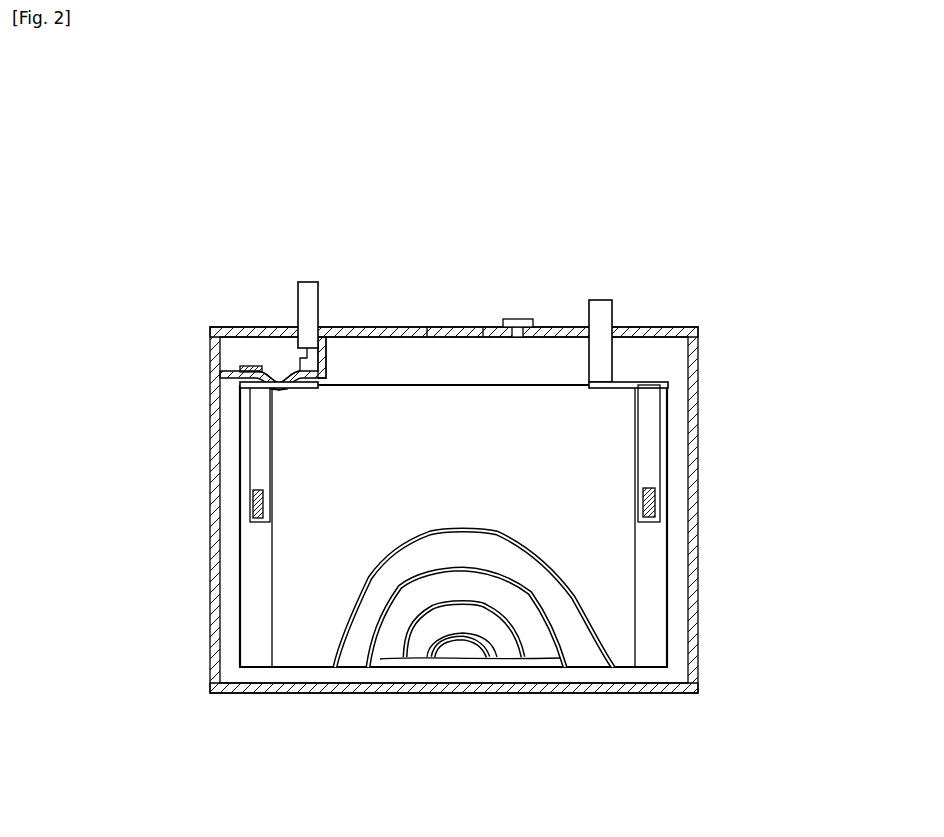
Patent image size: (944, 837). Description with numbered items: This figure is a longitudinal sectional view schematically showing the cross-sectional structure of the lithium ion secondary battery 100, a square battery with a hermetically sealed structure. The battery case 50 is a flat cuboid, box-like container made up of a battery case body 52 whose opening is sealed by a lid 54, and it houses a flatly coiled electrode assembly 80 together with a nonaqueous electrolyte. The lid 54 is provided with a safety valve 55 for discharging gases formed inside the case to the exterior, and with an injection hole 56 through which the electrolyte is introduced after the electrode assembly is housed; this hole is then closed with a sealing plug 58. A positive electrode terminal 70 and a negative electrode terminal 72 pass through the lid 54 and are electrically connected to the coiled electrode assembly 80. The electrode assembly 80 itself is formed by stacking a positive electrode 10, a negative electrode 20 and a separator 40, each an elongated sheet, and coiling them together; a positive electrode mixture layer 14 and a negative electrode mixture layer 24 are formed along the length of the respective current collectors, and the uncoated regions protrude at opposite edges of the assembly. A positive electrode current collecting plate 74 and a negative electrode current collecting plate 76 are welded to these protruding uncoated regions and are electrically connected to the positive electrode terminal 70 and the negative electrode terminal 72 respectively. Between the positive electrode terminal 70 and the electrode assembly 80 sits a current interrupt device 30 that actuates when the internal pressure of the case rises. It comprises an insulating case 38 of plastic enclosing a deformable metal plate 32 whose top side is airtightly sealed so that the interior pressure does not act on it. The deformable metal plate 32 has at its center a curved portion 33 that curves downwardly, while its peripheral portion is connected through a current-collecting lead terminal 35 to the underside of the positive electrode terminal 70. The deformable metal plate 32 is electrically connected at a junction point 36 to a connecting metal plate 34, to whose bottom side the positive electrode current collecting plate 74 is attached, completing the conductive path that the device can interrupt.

The lithium ion secondary battery 100 is at (699, 238).
The battery case 50 is at (699, 517).
The battery case body 52 is at (690, 645).
The lid 54 is at (560, 328).
The safety valve 55 is at (450, 332).
The injection hole 56 is at (514, 320).
The sealing plug 58 is at (521, 318).
The positive electrode terminal 70 is at (307, 290).
The negative electrode terminal 72 is at (597, 313).
The positive electrode current collecting plate 74 is at (260, 447).
The negative electrode current collecting plate 76 is at (648, 406).
The coiled electrode assembly 80 is at (400, 410).
The current interrupt device 30 is at (234, 356).
The deformable metal plate 32 is at (249, 366).
The curved portion 33 is at (263, 393).
The connecting metal plate 34 is at (312, 388).
The current-collecting lead terminal 35 is at (298, 360).
The junction point 36 is at (278, 383).
The insulating case 38 is at (328, 362).
The separator 40 is at (300, 647).
The positive electrode 10 is at (353, 647).
The positive electrode mixture layer 14 is at (463, 660).
The negative electrode 20 is at (424, 650).
The negative electrode mixture layer 24 is at (464, 697).